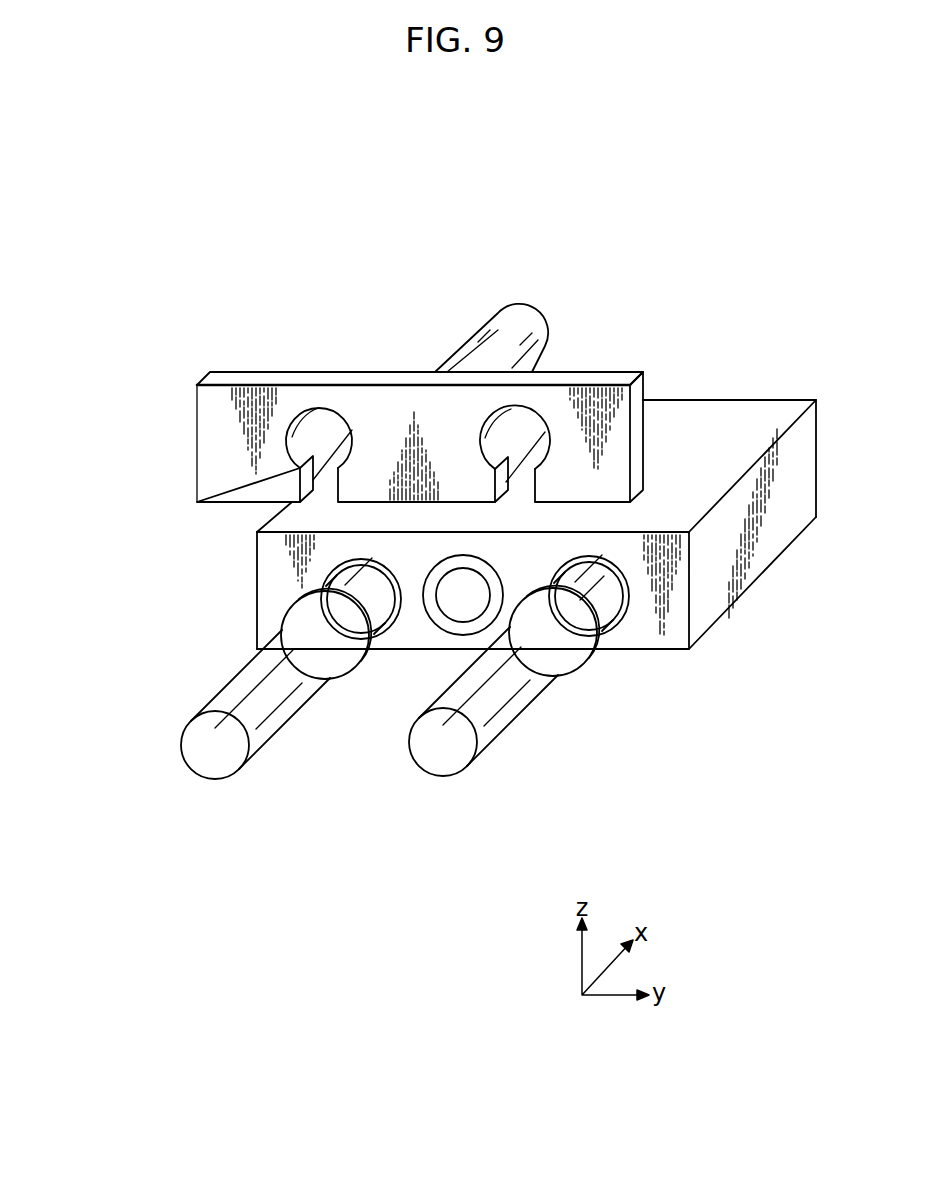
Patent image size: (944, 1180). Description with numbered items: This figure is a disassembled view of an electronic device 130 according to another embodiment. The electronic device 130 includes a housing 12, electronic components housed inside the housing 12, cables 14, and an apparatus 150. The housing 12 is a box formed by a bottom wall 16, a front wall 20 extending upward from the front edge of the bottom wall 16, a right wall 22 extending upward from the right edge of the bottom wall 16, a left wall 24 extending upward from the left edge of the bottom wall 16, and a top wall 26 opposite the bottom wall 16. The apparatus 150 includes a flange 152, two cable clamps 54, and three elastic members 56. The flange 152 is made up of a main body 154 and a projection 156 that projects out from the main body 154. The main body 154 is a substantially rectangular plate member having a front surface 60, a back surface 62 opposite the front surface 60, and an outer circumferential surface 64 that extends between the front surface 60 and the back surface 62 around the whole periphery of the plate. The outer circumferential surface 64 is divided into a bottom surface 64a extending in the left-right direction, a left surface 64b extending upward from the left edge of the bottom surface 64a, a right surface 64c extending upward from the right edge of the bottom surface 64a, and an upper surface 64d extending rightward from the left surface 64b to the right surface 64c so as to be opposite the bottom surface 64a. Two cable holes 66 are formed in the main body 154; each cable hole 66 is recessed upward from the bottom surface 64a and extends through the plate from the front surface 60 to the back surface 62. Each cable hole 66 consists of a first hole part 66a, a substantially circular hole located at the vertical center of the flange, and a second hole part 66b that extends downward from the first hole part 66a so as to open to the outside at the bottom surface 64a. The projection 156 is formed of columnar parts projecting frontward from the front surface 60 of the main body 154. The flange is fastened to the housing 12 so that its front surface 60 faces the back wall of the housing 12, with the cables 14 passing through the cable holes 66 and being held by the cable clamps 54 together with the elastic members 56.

The electronic device 130 is at (783, 142).
The housing 12 is at (752, 398).
The cables 14 is at (428, 765).
The bottom wall 16 is at (648, 652).
The front wall 20 is at (818, 462).
The right wall 22 is at (777, 520).
The left wall 24 is at (257, 623).
The top wall 26 is at (682, 412).
The cable clamp 54 is at (298, 603).
The elastic member 56 is at (334, 560).
The front surface 60 is at (237, 372).
The back surface 62 is at (220, 407).
The outer circumferential surface 64 is at (400, 383).
The bottom surface 64a is at (600, 513).
The left surface 64b is at (197, 432).
The right surface 64c is at (636, 432).
The upper surface 64d is at (618, 378).
The cable hole 66 is at (268, 310).
The first hole part 66a is at (316, 422).
The second hole part 66b is at (338, 455).
The apparatus 150 is at (100, 460).
The flange 152 is at (197, 447).
The main body 154 is at (430, 408).
The projection 156 is at (511, 325).